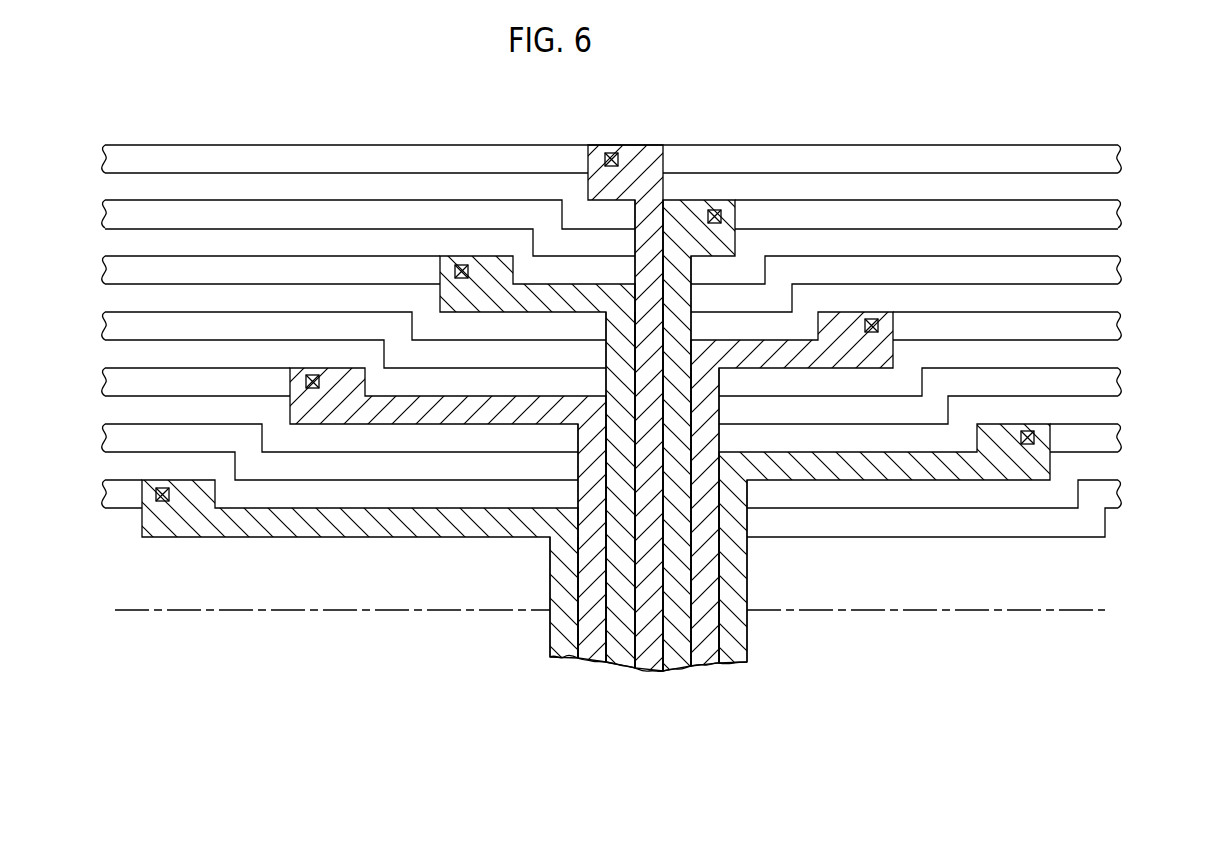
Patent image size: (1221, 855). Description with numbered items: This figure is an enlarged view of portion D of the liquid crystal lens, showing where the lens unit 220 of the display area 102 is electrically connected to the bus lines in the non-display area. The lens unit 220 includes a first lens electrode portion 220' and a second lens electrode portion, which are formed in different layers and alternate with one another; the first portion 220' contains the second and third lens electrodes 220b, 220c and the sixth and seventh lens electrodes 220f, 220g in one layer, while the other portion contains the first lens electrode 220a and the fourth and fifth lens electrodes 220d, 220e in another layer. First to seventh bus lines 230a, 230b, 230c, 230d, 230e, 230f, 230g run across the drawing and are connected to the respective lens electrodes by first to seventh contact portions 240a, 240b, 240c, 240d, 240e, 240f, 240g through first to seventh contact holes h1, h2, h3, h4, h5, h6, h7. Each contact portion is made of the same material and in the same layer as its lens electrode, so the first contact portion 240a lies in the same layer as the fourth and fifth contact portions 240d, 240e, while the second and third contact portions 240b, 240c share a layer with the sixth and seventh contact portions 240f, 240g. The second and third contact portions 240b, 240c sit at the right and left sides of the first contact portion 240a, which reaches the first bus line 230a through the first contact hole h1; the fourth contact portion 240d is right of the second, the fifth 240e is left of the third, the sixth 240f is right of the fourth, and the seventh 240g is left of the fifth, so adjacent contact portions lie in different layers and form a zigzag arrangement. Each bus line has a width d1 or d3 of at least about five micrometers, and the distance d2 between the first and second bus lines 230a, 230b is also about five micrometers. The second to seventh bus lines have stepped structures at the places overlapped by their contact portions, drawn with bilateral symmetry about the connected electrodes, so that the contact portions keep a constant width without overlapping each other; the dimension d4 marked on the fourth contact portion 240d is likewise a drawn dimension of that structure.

The first bus line 230a is at (1122, 159).
The second bus line 230b is at (1122, 215).
The third bus line 230c is at (1122, 271).
The fourth bus line 230d is at (1122, 327).
The fifth bus line 230e is at (1122, 383).
The sixth bus line 230f is at (1122, 439).
The seventh bus line 230g is at (1122, 495).
The first contact portion 240a is at (636, 145).
The second contact portion 240b is at (688, 200).
The third contact portion 240c is at (440, 294).
The fourth contact portion 240d is at (893, 352).
The fifth contact portion 240e is at (290, 405).
The sixth contact portion 240f is at (1050, 462).
The seventh contact portion 240g is at (142, 522).
The first lens electrode 220a is at (649, 671).
The second lens electrode 220b is at (677, 669).
The third lens electrode 220c is at (620, 665).
The fourth lens electrode 220d is at (705, 665).
The fifth lens electrode 220e is at (592, 661).
The sixth lens electrode 220f is at (733, 663).
The seventh lens electrode 220g is at (564, 659).
The first lens electrode portion 220' is at (609, 761).
The lens unit 220 is at (635, 817).
The first contact hole h1 is at (605, 159).
The second contact hole h2 is at (722, 216).
The third contact hole h3 is at (455, 271).
The fourth contact hole h4 is at (878, 325).
The fifth contact hole h5 is at (306, 381).
The sixth contact hole h6 is at (1034, 437).
The seventh contact hole h7 is at (156, 494).
The width of the first bus line d1 is at (1049, 145).
The distance between the bus lines d2 is at (1058, 173).
The width of the second bus line d3 is at (1049, 200).
The thickness of fourth contact electrode d4 is at (832, 312).
The display area 102 is at (851, 630).
The portion D is at (645, 61).